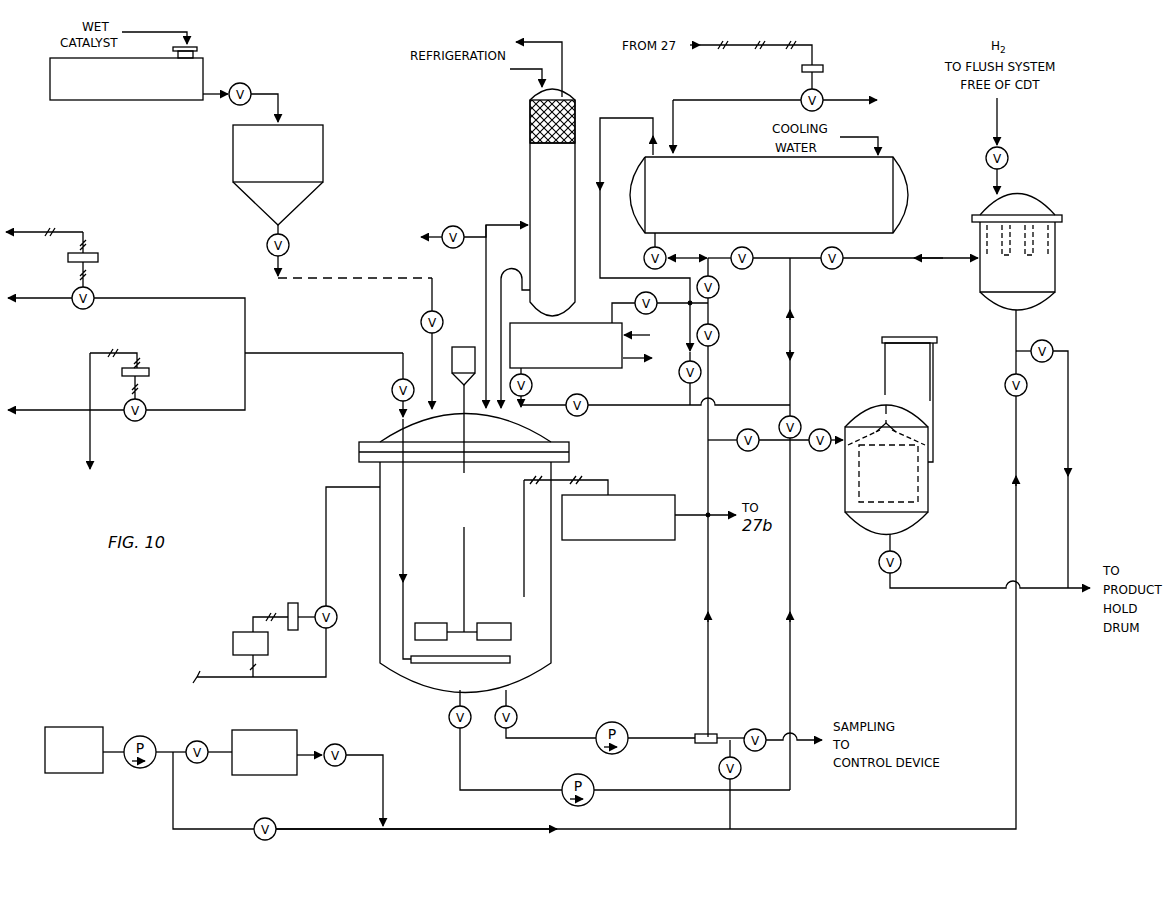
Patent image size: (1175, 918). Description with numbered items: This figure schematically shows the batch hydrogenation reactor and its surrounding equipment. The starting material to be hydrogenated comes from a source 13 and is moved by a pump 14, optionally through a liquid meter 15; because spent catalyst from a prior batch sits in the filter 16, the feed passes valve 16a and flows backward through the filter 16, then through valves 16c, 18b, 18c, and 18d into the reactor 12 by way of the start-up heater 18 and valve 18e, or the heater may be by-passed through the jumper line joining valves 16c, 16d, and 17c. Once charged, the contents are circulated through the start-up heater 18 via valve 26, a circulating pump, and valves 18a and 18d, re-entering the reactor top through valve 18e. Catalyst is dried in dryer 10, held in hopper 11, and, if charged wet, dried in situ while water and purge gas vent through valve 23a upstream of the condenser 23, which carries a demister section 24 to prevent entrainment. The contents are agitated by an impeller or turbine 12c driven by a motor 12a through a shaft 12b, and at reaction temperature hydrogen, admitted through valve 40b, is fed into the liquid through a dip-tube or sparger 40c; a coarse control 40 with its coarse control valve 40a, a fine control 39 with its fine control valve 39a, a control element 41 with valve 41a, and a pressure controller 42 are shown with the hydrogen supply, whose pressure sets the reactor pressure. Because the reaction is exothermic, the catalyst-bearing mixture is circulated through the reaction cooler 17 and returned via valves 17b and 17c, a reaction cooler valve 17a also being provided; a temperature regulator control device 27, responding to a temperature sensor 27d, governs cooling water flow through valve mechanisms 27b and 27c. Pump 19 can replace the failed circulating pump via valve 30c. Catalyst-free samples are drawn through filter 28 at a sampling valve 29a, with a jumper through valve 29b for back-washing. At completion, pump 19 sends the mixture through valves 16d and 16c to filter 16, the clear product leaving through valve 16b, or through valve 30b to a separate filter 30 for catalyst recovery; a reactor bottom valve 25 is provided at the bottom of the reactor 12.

The dryer 10 is at (50, 72).
The hopper 11 is at (233, 145).
The reactor 12 is at (473, 523).
The motor 12a is at (463, 346).
The shaft 12b is at (463, 594).
The impeller or turbine 12c is at (487, 628).
The source 13 is at (68, 727).
The pump 14 is at (137, 737).
The liquid meter 15 is at (258, 730).
The filter 16 is at (1045, 210).
The valve 16a is at (1005, 378).
The valve 16b is at (1050, 344).
The valve 16c is at (842, 267).
The valve 16d is at (798, 420).
The reaction cooler 17 is at (716, 157).
The reaction cooler valve 17a is at (645, 253).
The valve 17b is at (680, 379).
The valve 17c is at (584, 414).
The start-up heater 18 is at (592, 326).
The valve 18a is at (719, 341).
The valve 18b is at (749, 267).
The valve 18c is at (719, 293).
The valve 18d is at (655, 311).
The valve 18e is at (532, 386).
The pump 19 is at (566, 781).
The condenser 23 is at (545, 172).
The valve 23a is at (447, 228).
The demister section 24 is at (530, 115).
The reactor bottom valve 25 is at (449, 717).
The valve 26 is at (517, 717).
The temperature regulator control device 27 is at (657, 498).
The valve mechanism 27b is at (822, 64).
The valve mechanism 27c is at (822, 93).
The temperature sensor 27d is at (524, 563).
The filter 28 is at (695, 737).
The sampling valve 29a is at (752, 729).
The valve 29b is at (719, 769).
The separate filter 30 is at (868, 409).
The valve 30b is at (818, 452).
The valve 30c is at (745, 452).
The fine control 39 is at (97, 257).
The fine control valve 39a is at (94, 297).
The coarse control 40 is at (148, 371).
The coarse control valve 40a is at (143, 421).
The valve 40b is at (395, 386).
The dip-tube or sparger 40c is at (436, 664).
The control element 41 is at (287, 609).
The valve 41a is at (336, 612).
The pressure controller 42 is at (236, 632).